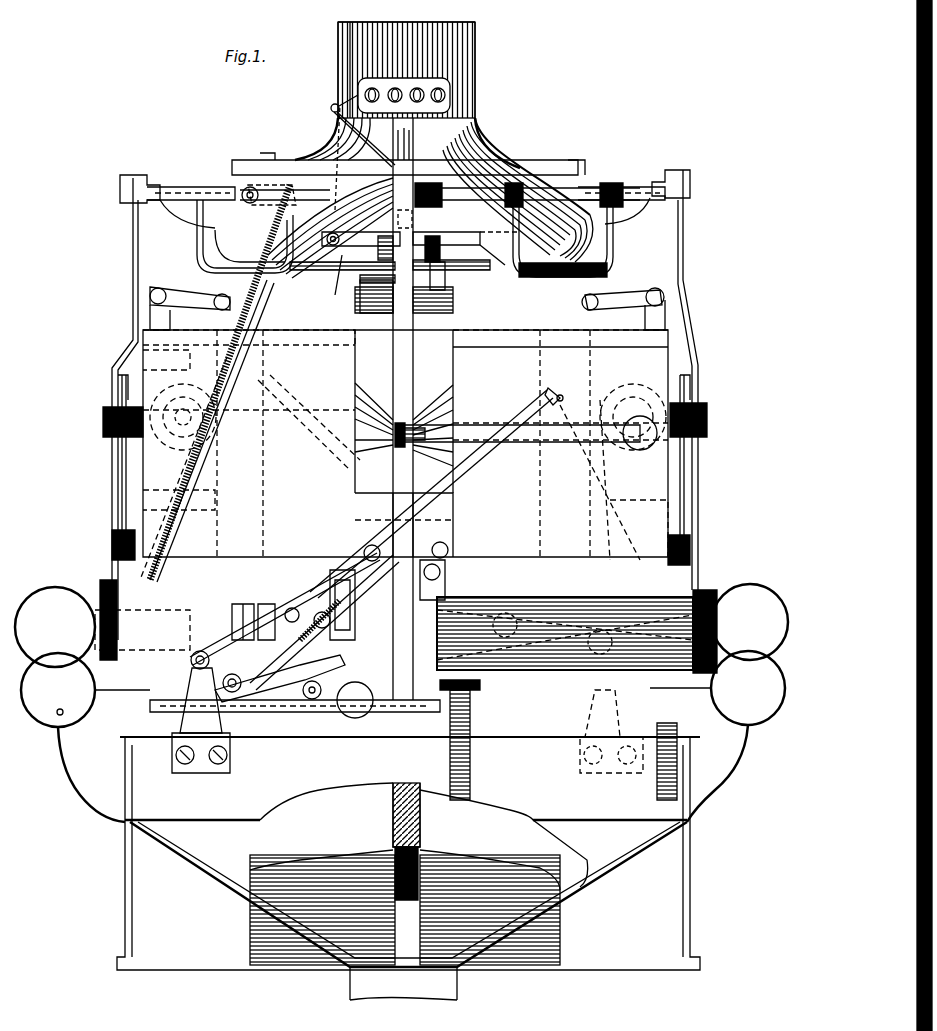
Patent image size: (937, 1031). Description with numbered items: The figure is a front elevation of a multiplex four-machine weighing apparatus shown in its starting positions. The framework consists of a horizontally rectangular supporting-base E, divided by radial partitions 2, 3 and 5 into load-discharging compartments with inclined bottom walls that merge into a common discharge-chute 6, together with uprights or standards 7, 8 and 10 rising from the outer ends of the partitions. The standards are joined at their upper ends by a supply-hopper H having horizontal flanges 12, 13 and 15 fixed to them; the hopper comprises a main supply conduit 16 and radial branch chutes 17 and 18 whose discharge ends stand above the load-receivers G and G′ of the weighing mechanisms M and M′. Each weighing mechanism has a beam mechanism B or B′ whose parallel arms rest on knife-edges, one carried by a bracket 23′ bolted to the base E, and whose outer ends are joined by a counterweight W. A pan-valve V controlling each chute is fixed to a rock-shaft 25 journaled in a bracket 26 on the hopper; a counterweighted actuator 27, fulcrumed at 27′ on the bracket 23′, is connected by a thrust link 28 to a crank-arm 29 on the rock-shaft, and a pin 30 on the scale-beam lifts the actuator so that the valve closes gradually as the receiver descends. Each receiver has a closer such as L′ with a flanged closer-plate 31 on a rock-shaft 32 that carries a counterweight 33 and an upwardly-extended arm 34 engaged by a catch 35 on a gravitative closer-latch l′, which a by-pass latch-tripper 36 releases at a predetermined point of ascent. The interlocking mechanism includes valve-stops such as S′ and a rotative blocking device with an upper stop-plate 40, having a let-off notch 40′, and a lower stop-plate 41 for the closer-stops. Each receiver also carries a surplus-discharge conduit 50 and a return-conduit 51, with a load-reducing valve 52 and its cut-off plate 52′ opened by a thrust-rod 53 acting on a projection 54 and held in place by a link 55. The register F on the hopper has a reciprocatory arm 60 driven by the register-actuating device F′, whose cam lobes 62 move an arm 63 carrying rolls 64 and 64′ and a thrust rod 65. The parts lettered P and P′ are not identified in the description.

The radial partition 2 is at (422, 823).
The radial partition 3 is at (322, 874).
The radial partition 5 is at (504, 877).
The common discharge-chute 6 is at (395, 1002).
The upright or standard 7 is at (405, 346).
The upright or standard 8 is at (265, 308).
The upright or standard 10 is at (540, 322).
The horizontal flange 12 is at (450, 130).
The horizontal flange 13 is at (244, 160).
The horizontal flange 15 is at (578, 168).
The main supply compartment or conduit 16 is at (395, 24).
The branch conduit or chute 17 is at (510, 190).
The branch conduit or chute 18 is at (345, 200).
The bracket 23′ is at (185, 775).
The rock-shaft 25 is at (220, 190).
The bracket 26 is at (178, 186).
The counterweighted beam or lever 27 is at (100, 590).
The fulcrum or pivot 27′ is at (260, 610).
The thrust member or link 28 is at (133, 254).
The crank-arm 29 is at (122, 200).
The pin or projection 30 is at (58, 716).
The flanged closer-plate 31 is at (240, 700).
The rock-shaft 32 is at (314, 700).
The counterweight 33 is at (360, 718).
The upwardly-extended arm 34 is at (280, 678).
The catch 35 is at (292, 608).
The by-pass latch-tripper 36 is at (348, 605).
The stop-plate or blocking-plate 40 is at (342, 292).
The let-off notch 40′ is at (362, 300).
The stop-plate or blocking-plate 41 is at (405, 720).
The surplus-discharge conduit 50 is at (390, 400).
The return-conduit 51 is at (404, 525).
The load-reducing valve 52 is at (440, 432).
The cut-off plate 52′ is at (395, 442).
The thrust-rod 53 is at (280, 400).
The projection 54 is at (118, 378).
The link 55 is at (112, 545).
The reciprocatory actuating member or arm 60 is at (332, 105).
The working faces or lobes 62 is at (440, 248).
The arm 63 is at (360, 265).
The roll 64 is at (428, 212).
The roll 64′ is at (398, 270).
The thrust rod or member 65 is at (378, 150).
The beam mechanism B is at (555, 597).
The beam mechanism B′ is at (48, 720).
The supporting-base E is at (125, 908).
The register F is at (452, 107).
The registering actuating device F′ is at (470, 185).
The load-receiver G is at (655, 478).
The load-receiver G′ is at (150, 477).
The supply-hopper H is at (476, 52).
The closer L′ is at (305, 712).
The weighing mechanism M is at (560, 467).
The weighing mechanism M′ is at (249, 443).
The pawl P is at (450, 580).
The pawl P′ is at (345, 580).
The valve-stop S′ is at (330, 250).
The oscillatory valve or stream-controller V is at (613, 268).
The counterweight W is at (510, 553).
The gravitative closer-latch l′ is at (322, 610).